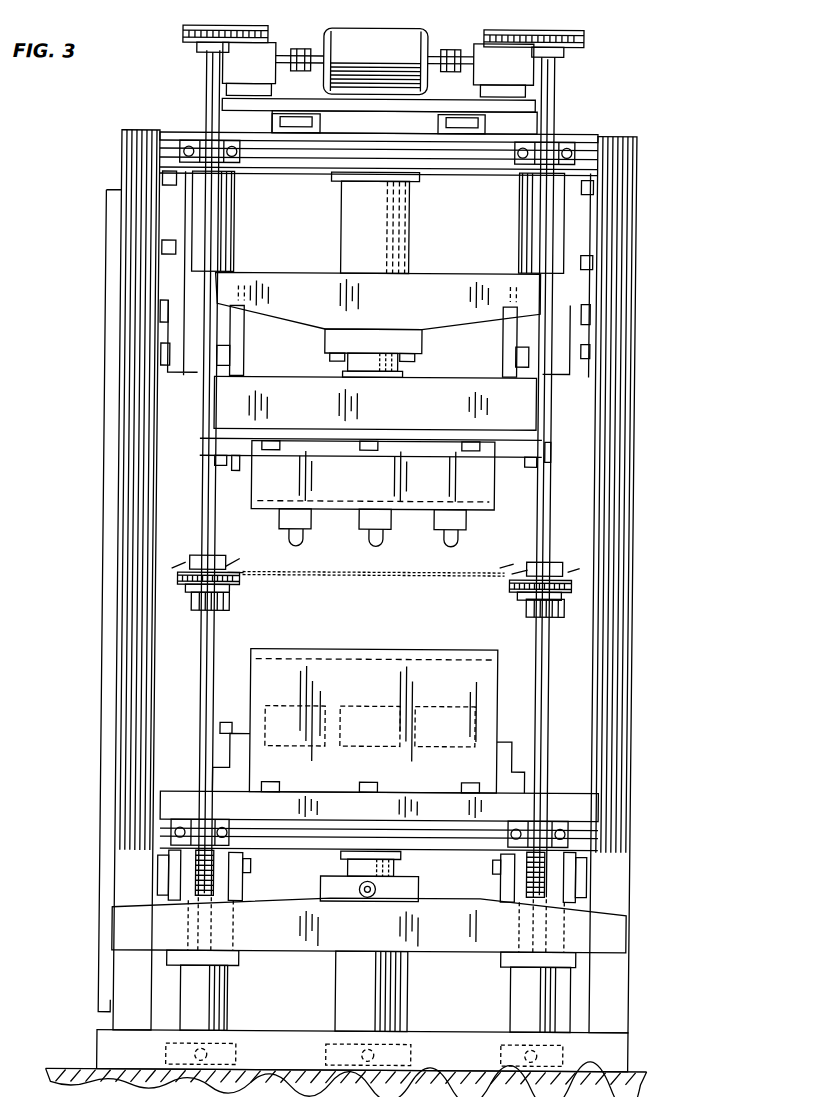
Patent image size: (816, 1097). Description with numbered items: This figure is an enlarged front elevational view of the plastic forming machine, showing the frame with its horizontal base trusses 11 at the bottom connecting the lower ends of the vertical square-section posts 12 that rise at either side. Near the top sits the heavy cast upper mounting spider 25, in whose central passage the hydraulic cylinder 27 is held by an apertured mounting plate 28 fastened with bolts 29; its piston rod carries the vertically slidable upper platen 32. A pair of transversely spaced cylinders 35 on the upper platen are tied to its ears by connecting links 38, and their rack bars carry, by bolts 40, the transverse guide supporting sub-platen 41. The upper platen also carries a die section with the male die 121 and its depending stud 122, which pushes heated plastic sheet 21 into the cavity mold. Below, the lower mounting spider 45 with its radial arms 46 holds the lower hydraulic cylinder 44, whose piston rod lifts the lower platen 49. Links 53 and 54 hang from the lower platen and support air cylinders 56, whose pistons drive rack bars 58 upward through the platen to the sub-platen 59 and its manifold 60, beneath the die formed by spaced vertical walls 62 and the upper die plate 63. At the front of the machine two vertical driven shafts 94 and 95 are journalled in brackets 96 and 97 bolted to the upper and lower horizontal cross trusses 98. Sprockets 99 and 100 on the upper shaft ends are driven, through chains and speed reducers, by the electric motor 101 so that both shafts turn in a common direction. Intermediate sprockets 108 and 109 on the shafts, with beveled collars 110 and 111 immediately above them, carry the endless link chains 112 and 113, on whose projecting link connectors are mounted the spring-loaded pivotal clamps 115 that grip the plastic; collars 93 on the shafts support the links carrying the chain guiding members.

The base connector or truss 11 is at (292, 1040).
The vertical post 12 is at (135, 426).
The plastic film 21 is at (366, 575).
The upper mounting spider 25 is at (450, 272).
The hydraulic cylinder 27 is at (352, 229).
The mounting plate 28 is at (424, 337).
The bolt 29 is at (332, 356).
The upper platen 32 is at (438, 392).
The hydraulic or air cylinder 35 is at (235, 203).
The connecting link 38 is at (246, 328).
The bolt 40 is at (221, 468).
The sub-platen 41 is at (241, 468).
The lower hydraulic cylinder 44 is at (408, 998).
The lower mounting spider 45 is at (432, 898).
The radial arm 46 is at (167, 932).
The lower platen 49 is at (577, 800).
The connecting link 53 is at (182, 872).
The link 54 is at (247, 890).
The air cylinder 56 is at (236, 988).
The rack bar 58 is at (203, 888).
The sub-platen 59 is at (526, 778).
The manifold 60 is at (511, 760).
The die sidewall 62 is at (478, 680).
The die plate 63 is at (413, 650).
The collar 93 is at (234, 603).
The driven shaft 94 is at (206, 97).
The driven shaft 95 is at (558, 100).
The bracket 96 is at (205, 145).
The bracket 97 is at (560, 143).
The horizontal cross truss 98 is at (452, 165).
The sprocket 99 is at (213, 27).
The sprocket 100 is at (580, 30).
The electric motor 101 is at (405, 45).
The sprocket 108 is at (184, 580).
The sprocket 109 is at (576, 586).
The beveled collar 110 is at (222, 566).
The beveled collar 111 is at (564, 574).
The endless link chain 112 is at (244, 582).
The endless link chain 113 is at (516, 588).
The clamp 115 is at (244, 562).
The male die 121 is at (444, 517).
The stud 122 is at (309, 538).